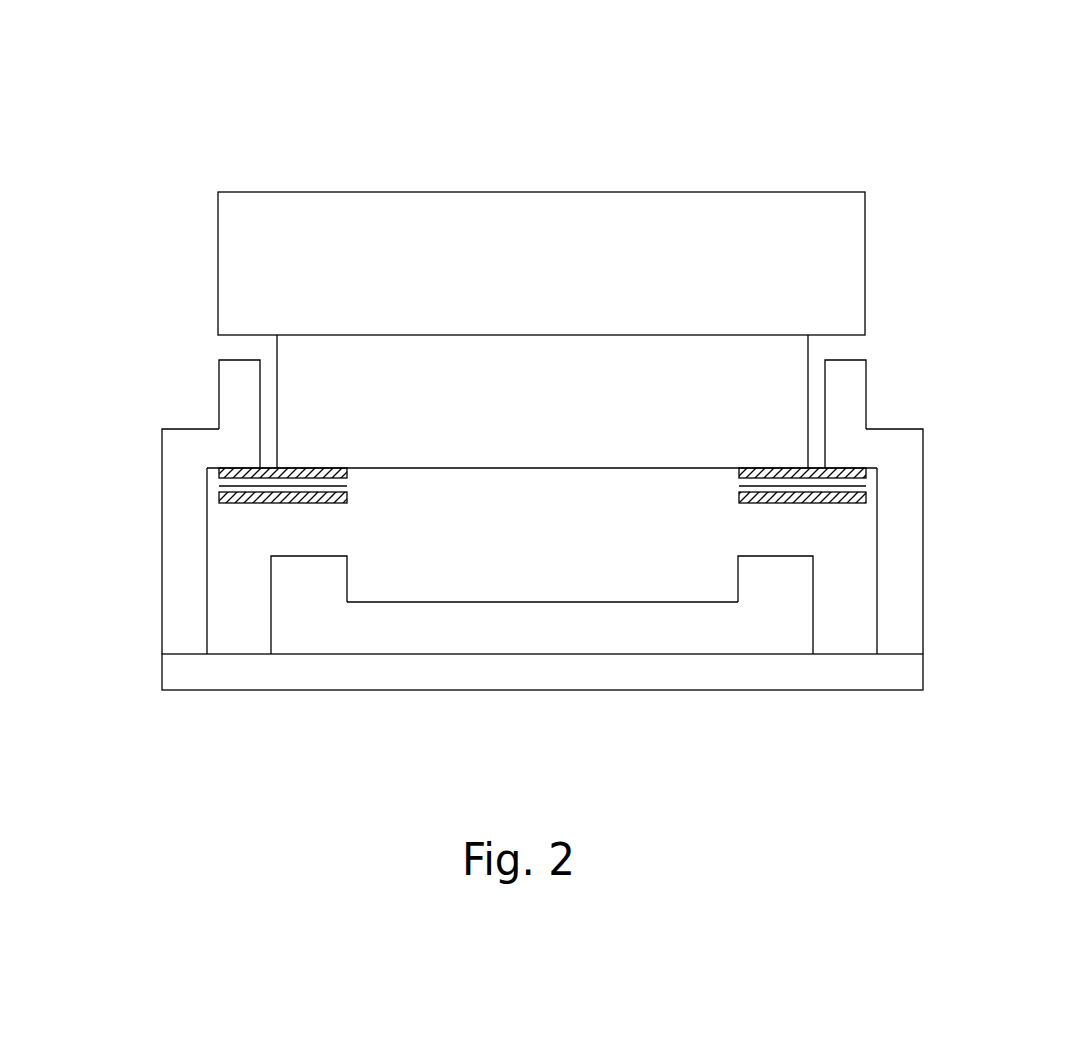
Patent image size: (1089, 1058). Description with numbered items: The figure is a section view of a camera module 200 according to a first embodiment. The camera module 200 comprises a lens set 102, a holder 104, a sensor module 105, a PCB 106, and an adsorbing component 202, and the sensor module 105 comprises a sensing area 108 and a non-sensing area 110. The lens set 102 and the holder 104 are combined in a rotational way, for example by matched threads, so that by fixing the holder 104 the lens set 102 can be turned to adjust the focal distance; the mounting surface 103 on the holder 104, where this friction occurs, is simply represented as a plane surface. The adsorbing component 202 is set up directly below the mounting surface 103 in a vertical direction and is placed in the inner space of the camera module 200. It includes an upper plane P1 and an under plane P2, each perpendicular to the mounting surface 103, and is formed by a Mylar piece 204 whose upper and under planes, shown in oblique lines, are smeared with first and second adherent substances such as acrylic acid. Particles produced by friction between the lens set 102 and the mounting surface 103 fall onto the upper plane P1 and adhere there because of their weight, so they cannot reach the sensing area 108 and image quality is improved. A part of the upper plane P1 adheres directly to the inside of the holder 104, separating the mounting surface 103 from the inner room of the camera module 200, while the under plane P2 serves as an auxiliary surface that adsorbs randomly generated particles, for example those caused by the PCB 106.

The camera module 200 is at (950, 148).
The lens set 102 is at (237, 268).
The mounting surface 103 is at (260, 398).
The holder 104 is at (173, 627).
The sensor module 105 is at (622, 637).
The PCB 106 is at (853, 677).
The sensing area 108 is at (700, 600).
The non-sensing area 110 is at (298, 555).
The adsorbing component 202 is at (357, 492).
The Mylar piece 204 is at (222, 486).
The upper plane P1 is at (739, 472).
The under plane P2 is at (739, 500).